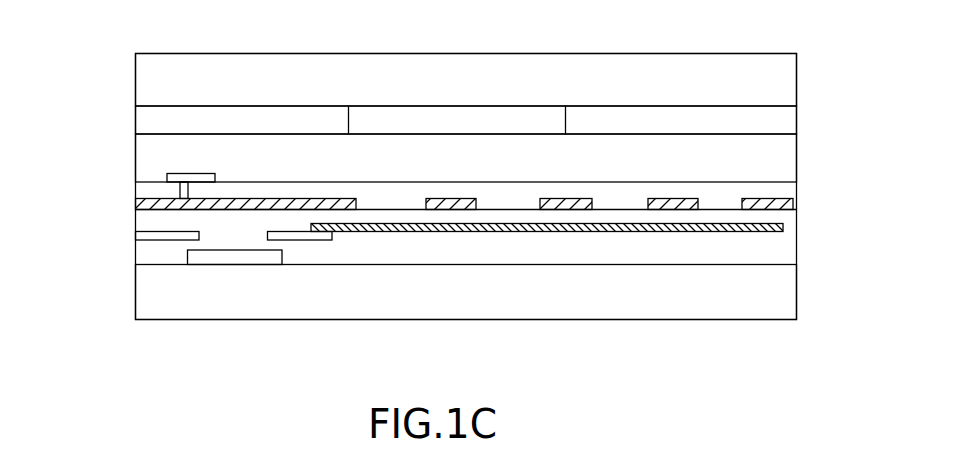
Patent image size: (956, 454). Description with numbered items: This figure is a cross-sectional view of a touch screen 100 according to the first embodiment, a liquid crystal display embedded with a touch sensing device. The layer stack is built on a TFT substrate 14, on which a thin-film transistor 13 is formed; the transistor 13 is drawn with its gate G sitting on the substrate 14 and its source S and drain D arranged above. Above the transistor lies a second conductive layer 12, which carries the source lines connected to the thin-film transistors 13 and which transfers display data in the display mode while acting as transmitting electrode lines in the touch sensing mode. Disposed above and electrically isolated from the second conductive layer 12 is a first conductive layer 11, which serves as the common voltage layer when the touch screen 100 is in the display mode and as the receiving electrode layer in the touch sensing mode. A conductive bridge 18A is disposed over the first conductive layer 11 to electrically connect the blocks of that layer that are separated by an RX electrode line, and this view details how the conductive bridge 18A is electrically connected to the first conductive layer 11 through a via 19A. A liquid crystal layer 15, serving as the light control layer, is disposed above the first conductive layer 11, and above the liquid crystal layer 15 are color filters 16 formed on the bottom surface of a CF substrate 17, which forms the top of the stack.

The touch screen 100 is at (80, 46).
The CF substrate 17 is at (150, 79).
The color filters 16 is at (150, 123).
The liquid crystal layer 15 is at (150, 153).
The conductive bridge 18A is at (175, 177).
The via 19A is at (176, 197).
The first conductive layer 11 is at (792, 203).
The second conductive layer 12 is at (783, 228).
The TFT substrate 14 is at (150, 287).
The thin-film transistor 13 is at (234, 319).
The source S is at (159, 237).
The gate G is at (235, 304).
The drain D is at (300, 296).